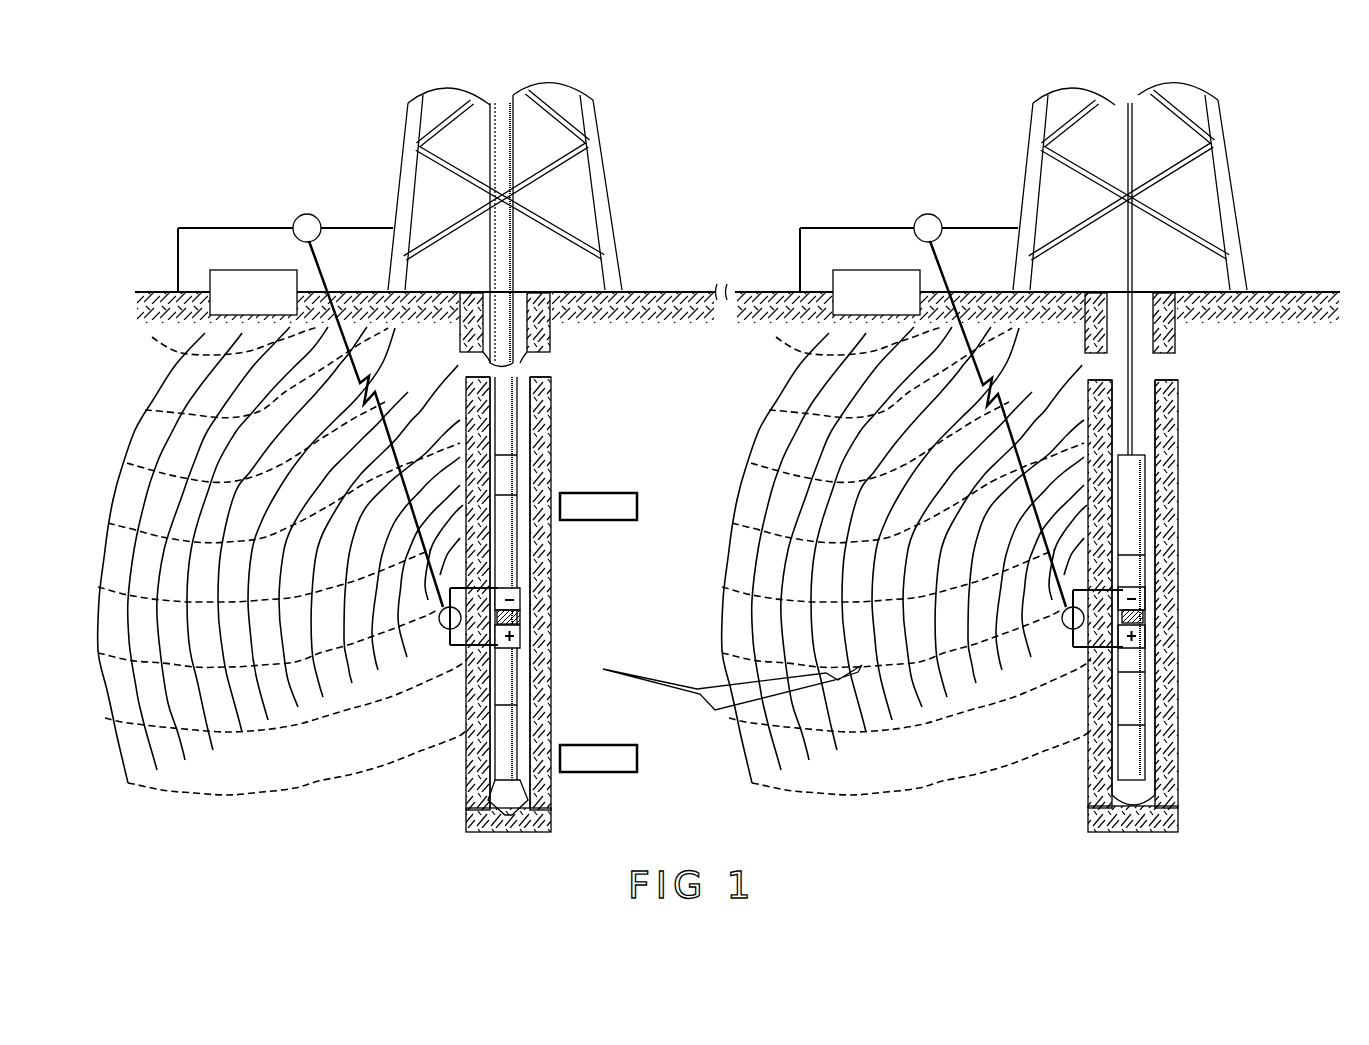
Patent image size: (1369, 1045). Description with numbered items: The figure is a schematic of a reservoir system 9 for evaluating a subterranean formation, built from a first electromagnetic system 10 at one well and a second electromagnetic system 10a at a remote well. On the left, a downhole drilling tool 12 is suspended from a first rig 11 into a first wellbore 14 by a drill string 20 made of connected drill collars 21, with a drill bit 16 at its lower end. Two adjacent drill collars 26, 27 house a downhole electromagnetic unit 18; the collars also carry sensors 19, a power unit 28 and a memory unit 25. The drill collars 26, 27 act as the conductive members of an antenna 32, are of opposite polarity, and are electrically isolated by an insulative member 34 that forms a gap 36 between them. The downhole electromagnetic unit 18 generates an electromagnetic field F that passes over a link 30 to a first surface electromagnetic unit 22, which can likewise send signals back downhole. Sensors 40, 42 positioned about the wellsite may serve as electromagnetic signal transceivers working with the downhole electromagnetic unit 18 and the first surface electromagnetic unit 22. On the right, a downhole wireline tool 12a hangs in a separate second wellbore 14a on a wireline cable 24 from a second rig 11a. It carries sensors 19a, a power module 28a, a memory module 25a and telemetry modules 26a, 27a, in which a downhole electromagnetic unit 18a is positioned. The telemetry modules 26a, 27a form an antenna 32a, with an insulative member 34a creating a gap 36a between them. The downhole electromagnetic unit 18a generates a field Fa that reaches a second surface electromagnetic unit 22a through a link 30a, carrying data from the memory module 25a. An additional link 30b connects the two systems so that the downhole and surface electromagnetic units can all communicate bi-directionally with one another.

The reservoir system 9 is at (749, 98).
The first electromagnetic system 10 is at (650, 404).
The second electromagnetic system 10a is at (1280, 402).
The first rig 11 is at (605, 130).
The second rig 11a is at (1232, 130).
The downhole drilling tool 12 is at (650, 496).
The downhole wireline tool 12a is at (1283, 500).
The first wellbore 14 is at (540, 336).
The second wellbore 14a is at (1170, 340).
The drill bit 16 is at (528, 789).
The downhole electromagnetic unit 18 is at (608, 540).
The downhole electromagnetic unit 18a is at (1246, 575).
The sensors 19 is at (438, 634).
The sensors 19a is at (1062, 636).
The drill string 20 is at (545, 352).
The drill collars 21 is at (540, 493).
The first surface electromagnetic unit 22 is at (285, 264).
The second surface electromagnetic unit 22a is at (909, 264).
The wireline cable 24 is at (1135, 410).
The memory unit 25 is at (520, 408).
The memory module 25a is at (1160, 460).
The drill collar 26 is at (540, 620).
The telemetry module 26a is at (1150, 587).
The drill collar 27 is at (525, 646).
The telemetry module 27a is at (1150, 652).
The power unit 28 is at (528, 733).
The power module 28a is at (1150, 540).
The link 30 is at (395, 438).
The link 30a is at (1000, 398).
The additional link 30b is at (838, 715).
The antenna 32 is at (525, 620).
The antenna 32a is at (1150, 626).
The insulative member 34 is at (520, 655).
The insulative member 34a is at (1110, 655).
The gap 36 is at (470, 696).
The gap 36a is at (1160, 688).
The sensor 40 is at (612, 520).
The sensor 42 is at (620, 745).